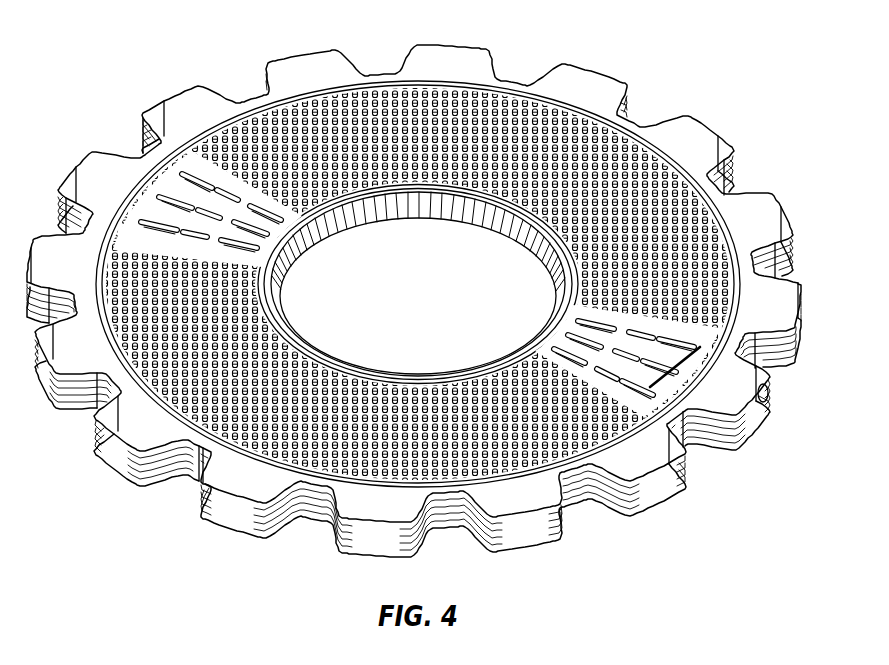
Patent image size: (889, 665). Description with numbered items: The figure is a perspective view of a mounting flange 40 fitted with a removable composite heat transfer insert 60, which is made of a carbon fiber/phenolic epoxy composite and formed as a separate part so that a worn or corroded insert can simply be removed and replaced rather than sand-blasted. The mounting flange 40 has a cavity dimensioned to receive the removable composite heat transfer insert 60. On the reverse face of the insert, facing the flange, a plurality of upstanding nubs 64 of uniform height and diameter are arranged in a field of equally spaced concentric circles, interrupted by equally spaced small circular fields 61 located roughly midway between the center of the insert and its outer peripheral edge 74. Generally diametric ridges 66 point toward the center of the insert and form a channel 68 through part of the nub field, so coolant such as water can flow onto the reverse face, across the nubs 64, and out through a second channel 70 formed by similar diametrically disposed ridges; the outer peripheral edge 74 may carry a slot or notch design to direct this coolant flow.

The mounting flange 40 is at (694, 136).
The removable composite heat transfer insert 60 is at (563, 423).
The small circular fields 61 is at (280, 147).
The nubs 64 is at (602, 158).
The ridges 66 is at (192, 172).
The channel 68 is at (150, 212).
The channel 70 is at (705, 350).
The outer peripheral edge 74 is at (670, 382).